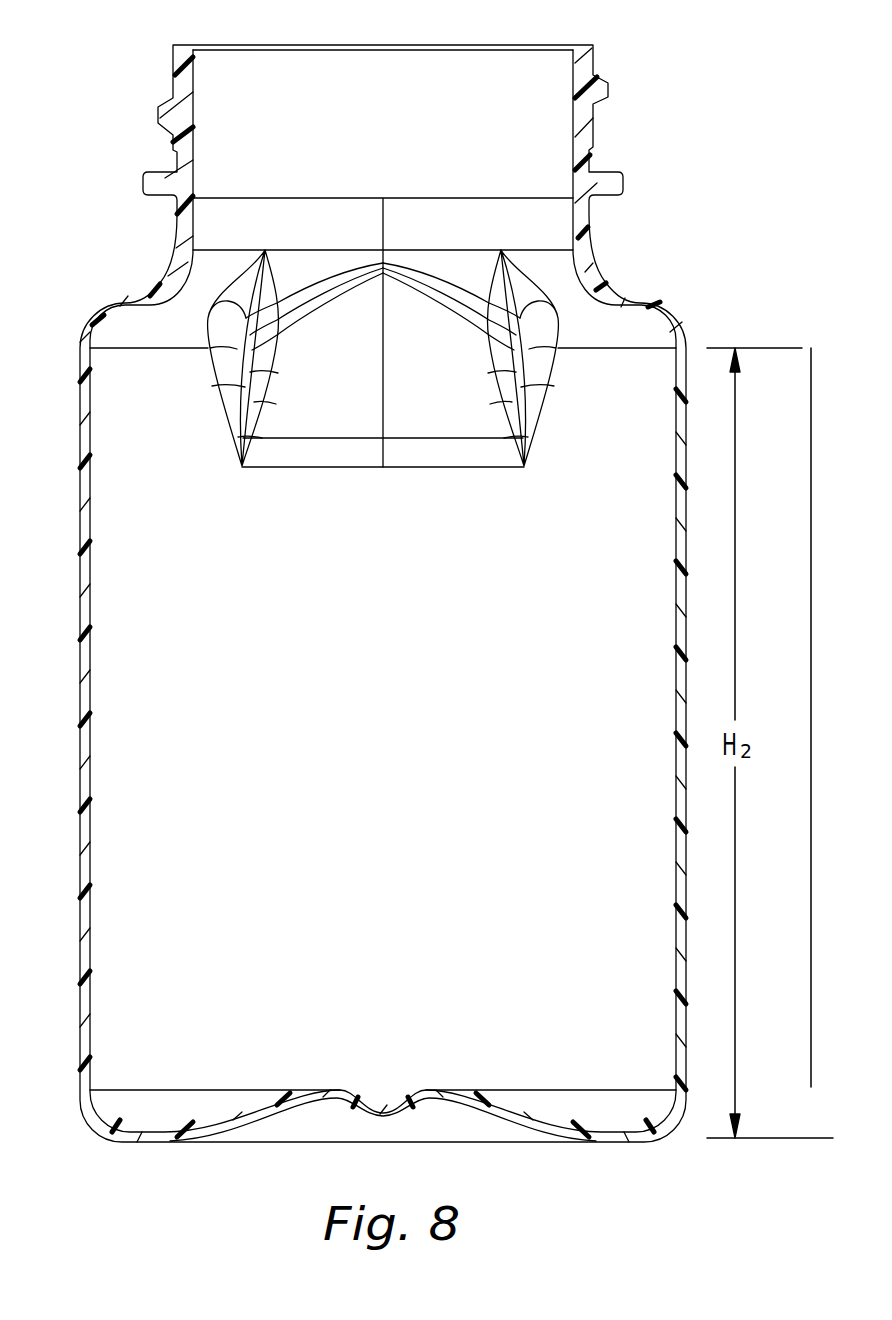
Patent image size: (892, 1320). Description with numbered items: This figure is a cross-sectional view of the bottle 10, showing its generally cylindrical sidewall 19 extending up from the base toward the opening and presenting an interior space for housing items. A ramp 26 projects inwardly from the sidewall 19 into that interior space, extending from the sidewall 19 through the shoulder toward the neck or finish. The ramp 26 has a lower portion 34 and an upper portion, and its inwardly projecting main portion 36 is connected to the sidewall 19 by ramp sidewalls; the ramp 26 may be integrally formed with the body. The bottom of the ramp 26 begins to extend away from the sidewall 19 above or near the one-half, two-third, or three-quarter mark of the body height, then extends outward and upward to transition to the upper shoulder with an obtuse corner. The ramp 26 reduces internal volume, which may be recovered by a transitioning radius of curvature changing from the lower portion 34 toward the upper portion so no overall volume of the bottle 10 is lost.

The bottle 10 is at (662, 92).
The sidewall 19 is at (402, 735).
The ramp 26 is at (315, 368).
The lower portion 34 is at (463, 420).
The main portion 36 is at (360, 322).